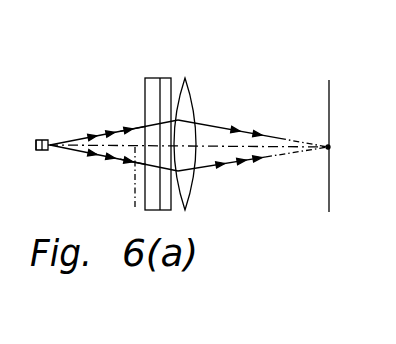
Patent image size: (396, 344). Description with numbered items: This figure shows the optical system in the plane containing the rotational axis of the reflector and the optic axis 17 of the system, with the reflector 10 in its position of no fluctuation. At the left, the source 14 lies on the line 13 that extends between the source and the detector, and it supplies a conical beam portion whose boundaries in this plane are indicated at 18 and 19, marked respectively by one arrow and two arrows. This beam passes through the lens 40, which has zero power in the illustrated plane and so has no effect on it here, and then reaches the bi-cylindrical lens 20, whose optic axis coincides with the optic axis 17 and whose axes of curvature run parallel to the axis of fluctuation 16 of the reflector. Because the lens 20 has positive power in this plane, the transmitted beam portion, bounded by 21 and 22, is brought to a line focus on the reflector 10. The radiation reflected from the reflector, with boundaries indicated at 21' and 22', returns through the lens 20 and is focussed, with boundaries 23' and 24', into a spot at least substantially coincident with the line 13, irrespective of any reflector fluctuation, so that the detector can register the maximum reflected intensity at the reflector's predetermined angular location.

The reflector 10 is at (328, 100).
The line including the source and the detector 13 is at (35, 152).
The source 14 is at (36, 139).
The axis of fluctuation of the reflector 16 is at (332, 149).
The optic axis of the system 17 is at (126, 186).
The beam boundary 18 is at (76, 135).
The beam boundary 19 is at (77, 156).
The bi-cylindrical lens 20 is at (188, 103).
The beam boundary 21 is at (229, 111).
The beam boundary 22 is at (222, 183).
The reflected beam boundary 21' is at (297, 176).
The reflected beam boundary 22' is at (296, 118).
The focussed reflected beam boundary 23' is at (118, 183).
The focussed reflected beam boundary 24' is at (132, 106).
The lens 40 is at (161, 78).